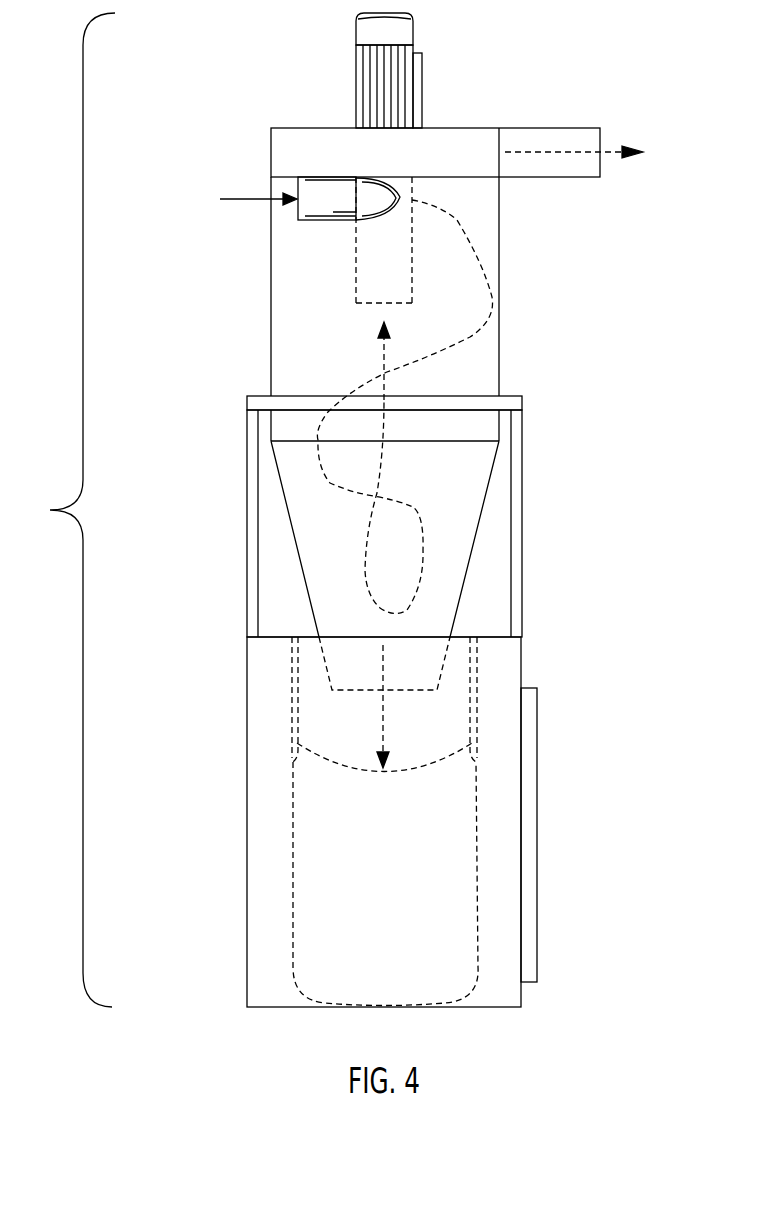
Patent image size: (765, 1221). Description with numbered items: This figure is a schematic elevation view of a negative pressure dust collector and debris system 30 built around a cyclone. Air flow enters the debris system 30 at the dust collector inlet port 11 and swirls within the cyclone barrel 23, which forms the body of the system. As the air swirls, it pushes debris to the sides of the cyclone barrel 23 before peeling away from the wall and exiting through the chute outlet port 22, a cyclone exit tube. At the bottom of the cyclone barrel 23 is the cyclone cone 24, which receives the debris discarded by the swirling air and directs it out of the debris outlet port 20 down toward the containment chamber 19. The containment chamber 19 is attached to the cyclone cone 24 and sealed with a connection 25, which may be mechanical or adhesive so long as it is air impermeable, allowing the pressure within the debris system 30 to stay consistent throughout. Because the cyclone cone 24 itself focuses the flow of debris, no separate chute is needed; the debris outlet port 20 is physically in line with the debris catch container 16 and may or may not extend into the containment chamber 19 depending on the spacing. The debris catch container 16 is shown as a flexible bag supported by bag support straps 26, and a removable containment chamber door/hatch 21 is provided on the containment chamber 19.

The dust collector inlet port 11 is at (327, 177).
The debris catch container 16 is at (288, 904).
The containment chamber 19 is at (247, 822).
The debris outlet port 20 is at (347, 690).
The removable containment chamber door/hatch 21 is at (537, 842).
The chute outlet port 22 is at (356, 258).
The cyclone barrel 23 is at (271, 371).
The cyclone cone 24 is at (290, 525).
The connection 25 is at (317, 637).
The bag support straps 26 is at (292, 678).
The negative pressure dust collector and debris system 30 is at (68, 510).